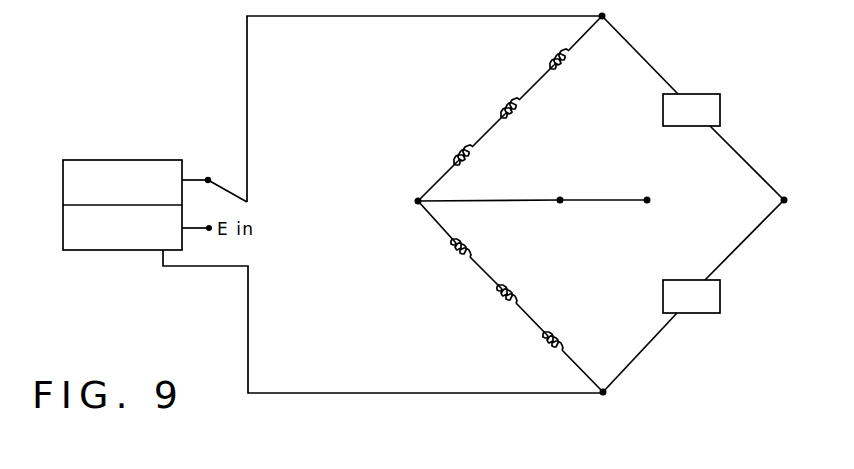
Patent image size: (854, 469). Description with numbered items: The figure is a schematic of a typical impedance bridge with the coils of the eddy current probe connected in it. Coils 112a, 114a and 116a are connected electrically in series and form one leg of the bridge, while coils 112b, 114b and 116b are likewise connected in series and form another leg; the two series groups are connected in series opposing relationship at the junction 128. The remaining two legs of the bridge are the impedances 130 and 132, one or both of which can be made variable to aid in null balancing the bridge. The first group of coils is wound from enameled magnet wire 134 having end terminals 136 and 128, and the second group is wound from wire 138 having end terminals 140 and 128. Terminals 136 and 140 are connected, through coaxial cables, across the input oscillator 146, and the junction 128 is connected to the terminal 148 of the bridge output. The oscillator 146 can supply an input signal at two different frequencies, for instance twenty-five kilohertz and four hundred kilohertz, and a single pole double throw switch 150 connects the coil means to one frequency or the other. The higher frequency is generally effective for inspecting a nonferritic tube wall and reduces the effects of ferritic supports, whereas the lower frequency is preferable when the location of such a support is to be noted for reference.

The coil 112a is at (547, 58).
The coil 114a is at (498, 104).
The coil 116a is at (453, 152).
The coil 112b is at (545, 350).
The coil 114b is at (495, 302).
The coil 116b is at (452, 262).
The junction 128 is at (417, 204).
The impedance 130 is at (711, 93).
The impedance 132 is at (721, 297).
The enameled magnet wire 134 is at (533, 73).
The end terminal 136 is at (605, 15).
The wire 138 is at (532, 318).
The end terminal 140 is at (606, 390).
The input oscillator 146 is at (63, 192).
The terminal of the bridge output 148 is at (560, 197).
The single pole double throw switch 150 is at (226, 185).